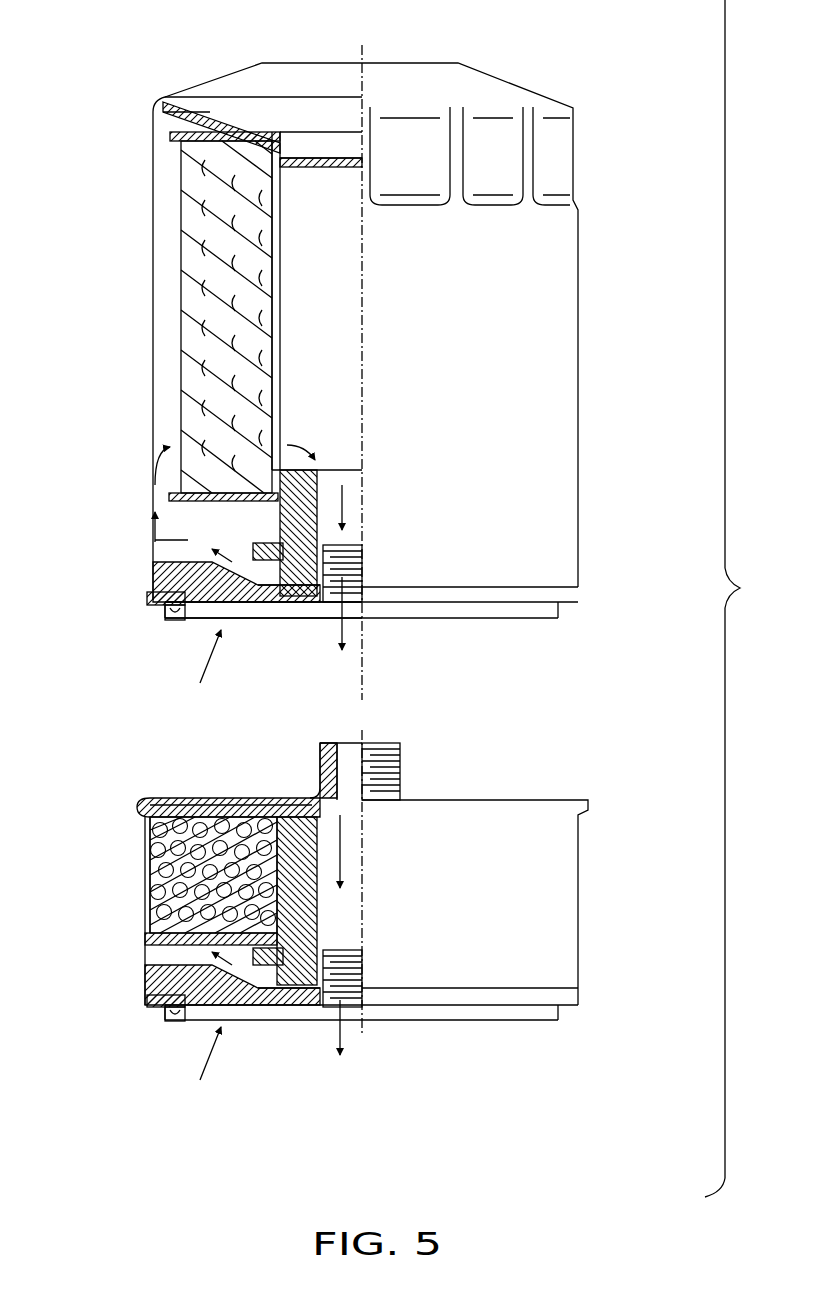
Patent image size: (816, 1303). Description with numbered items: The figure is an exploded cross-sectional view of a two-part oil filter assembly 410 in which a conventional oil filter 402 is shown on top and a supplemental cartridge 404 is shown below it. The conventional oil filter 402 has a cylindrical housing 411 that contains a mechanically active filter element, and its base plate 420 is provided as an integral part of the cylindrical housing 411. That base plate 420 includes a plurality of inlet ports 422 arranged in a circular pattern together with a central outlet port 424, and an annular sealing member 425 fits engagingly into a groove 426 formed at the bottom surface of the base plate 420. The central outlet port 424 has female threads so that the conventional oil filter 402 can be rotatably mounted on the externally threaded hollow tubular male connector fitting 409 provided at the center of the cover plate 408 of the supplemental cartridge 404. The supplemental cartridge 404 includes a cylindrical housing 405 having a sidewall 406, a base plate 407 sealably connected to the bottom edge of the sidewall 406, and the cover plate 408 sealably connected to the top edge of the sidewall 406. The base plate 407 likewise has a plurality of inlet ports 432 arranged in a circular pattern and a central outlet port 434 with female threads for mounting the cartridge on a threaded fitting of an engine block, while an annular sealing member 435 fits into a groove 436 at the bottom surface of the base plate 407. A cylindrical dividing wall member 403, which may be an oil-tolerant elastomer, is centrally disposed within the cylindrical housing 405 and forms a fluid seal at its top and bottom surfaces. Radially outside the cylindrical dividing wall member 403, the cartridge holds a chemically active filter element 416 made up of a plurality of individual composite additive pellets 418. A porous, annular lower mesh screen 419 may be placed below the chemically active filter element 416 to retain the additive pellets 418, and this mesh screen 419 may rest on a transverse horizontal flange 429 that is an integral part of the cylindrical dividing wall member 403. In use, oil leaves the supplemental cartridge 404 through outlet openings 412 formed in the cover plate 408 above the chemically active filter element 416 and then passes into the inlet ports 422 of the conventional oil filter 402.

The conventional oil filter 402 is at (120, 185).
The cylindrical dividing wall member 403 is at (300, 830).
The supplemental cartridge 404 is at (80, 830).
The cylindrical housing 405 is at (453, 904).
The sidewall 406 is at (419, 970).
The base plate 407 is at (285, 1010).
The cover plate 408 is at (178, 800).
The hollow tubular male connector fitting 409 is at (400, 770).
The oil filter assembly 410 is at (622, 72).
The cylindrical housing 411 is at (436, 370).
The outlet openings 412 is at (238, 800).
The chemically active filter element 416 is at (188, 255).
The composite additive pellets 418 is at (143, 898).
The lower mesh screen 419 is at (200, 952).
The base plate 420 is at (288, 612).
The inlet ports 422 is at (235, 606).
The central outlet port 424 is at (352, 598).
The annular sealing member 425 is at (170, 622).
The groove 426 is at (150, 608).
The transverse horizontal flange 429 is at (277, 1008).
The inlet ports 432 is at (234, 1022).
The central outlet port 434 is at (355, 1010).
The annular sealing member 435 is at (175, 1025).
The groove 436 is at (160, 1012).